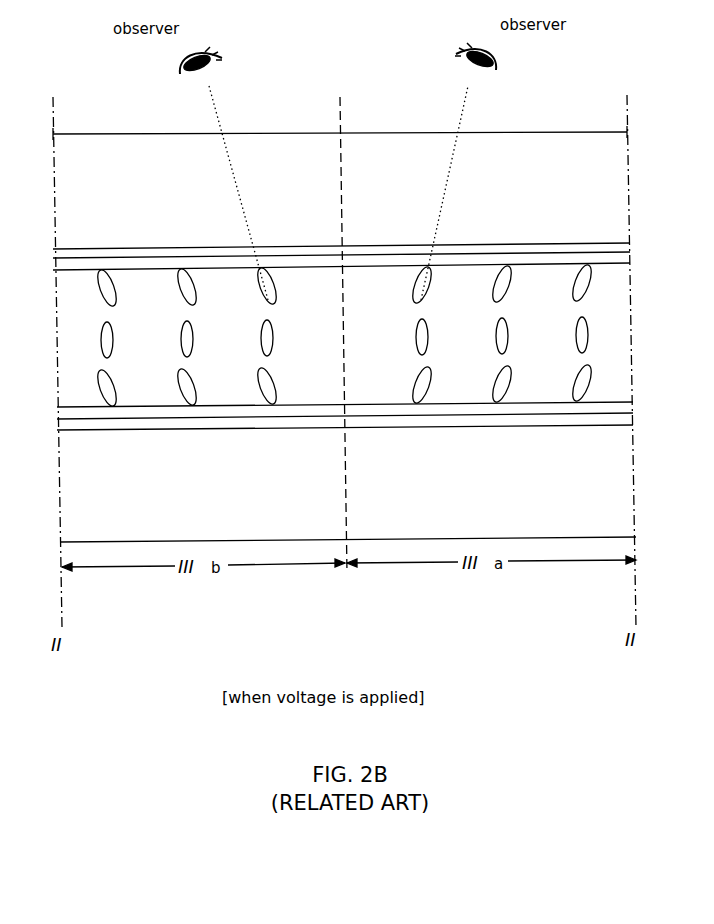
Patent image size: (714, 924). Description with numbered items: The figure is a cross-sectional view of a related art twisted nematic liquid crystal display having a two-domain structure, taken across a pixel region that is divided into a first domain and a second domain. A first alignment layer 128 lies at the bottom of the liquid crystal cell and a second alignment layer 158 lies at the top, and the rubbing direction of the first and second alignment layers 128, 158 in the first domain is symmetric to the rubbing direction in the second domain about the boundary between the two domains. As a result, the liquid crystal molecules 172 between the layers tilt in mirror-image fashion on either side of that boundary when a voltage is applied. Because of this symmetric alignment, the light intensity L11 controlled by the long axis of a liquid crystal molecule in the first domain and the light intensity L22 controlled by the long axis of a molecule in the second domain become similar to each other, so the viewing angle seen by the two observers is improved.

The second alignment layer 158 is at (143, 268).
The first alignment layer 128 is at (143, 413).
The liquid crystal molecules 172 is at (262, 340).
The light intensity L22 is at (209, 86).
The light intensity L11 is at (468, 86).